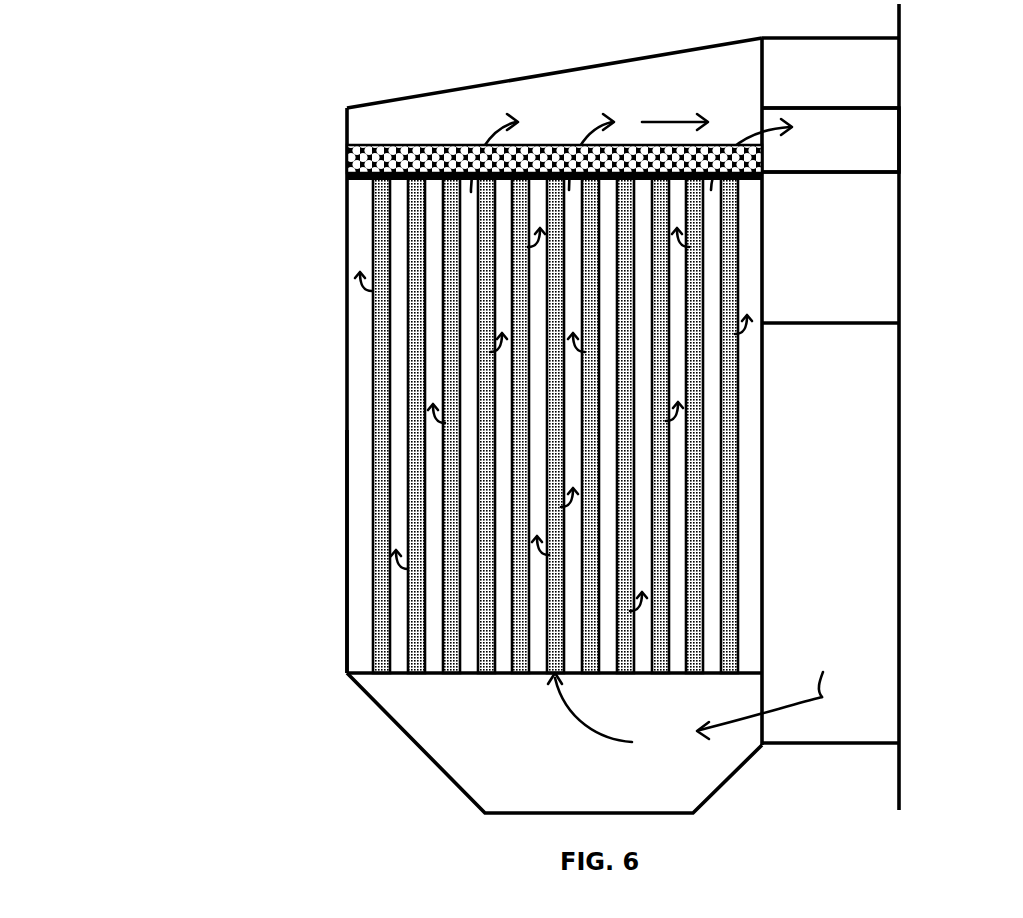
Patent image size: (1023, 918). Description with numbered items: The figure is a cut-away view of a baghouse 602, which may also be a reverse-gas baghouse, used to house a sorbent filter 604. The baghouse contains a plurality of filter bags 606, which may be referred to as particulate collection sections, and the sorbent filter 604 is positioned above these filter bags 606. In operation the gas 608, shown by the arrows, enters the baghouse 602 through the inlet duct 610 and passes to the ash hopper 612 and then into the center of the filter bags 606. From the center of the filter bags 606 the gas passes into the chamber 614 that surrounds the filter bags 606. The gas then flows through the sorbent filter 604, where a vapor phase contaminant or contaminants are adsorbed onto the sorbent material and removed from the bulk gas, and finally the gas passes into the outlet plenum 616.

The baghouse 602 is at (243, 335).
The sorbent filter 604 is at (347, 160).
The filter bags 606 is at (455, 355).
The gas 608 is at (822, 697).
The inlet duct 610 is at (900, 445).
The ash hopper 612 is at (400, 727).
The chamber 614 is at (347, 548).
The outlet plenum 616 is at (900, 145).